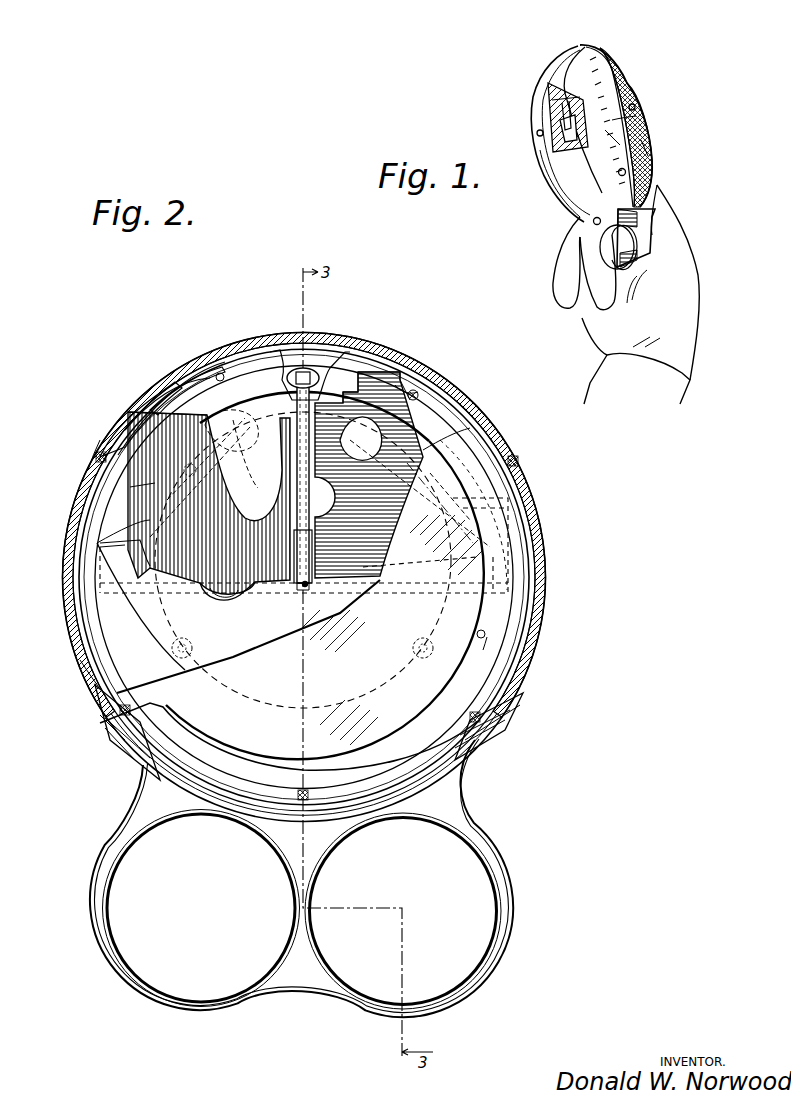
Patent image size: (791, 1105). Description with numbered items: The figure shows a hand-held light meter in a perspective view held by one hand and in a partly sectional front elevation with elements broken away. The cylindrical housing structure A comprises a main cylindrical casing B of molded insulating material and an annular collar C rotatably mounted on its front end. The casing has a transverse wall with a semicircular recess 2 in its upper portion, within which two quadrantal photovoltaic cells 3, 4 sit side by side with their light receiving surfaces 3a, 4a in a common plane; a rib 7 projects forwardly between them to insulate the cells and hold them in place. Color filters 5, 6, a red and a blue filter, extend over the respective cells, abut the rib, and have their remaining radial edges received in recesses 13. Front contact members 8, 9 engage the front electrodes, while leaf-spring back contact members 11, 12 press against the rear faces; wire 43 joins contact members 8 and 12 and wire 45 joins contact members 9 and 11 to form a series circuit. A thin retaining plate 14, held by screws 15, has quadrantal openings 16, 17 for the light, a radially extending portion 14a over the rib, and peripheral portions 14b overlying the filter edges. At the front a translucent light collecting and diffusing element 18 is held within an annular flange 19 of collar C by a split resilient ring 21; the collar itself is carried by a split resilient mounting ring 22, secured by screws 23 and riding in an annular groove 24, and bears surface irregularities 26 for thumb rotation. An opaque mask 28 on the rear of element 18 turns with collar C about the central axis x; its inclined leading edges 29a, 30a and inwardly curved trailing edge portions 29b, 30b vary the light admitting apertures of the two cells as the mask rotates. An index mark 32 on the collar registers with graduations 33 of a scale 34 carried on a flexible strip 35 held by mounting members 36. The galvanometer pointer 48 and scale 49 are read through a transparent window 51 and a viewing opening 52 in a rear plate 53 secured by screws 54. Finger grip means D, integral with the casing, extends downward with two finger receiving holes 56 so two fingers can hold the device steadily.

In FIG. 2, the semicircular recess 2 is at (410, 395).
In FIG. 2, the photovoltaic cell 3 is at (228, 393).
In FIG. 2, the light receiving surface 3a is at (230, 417).
In FIG. 2, the photovoltaic cell 4 is at (380, 398).
In FIG. 2, the light receiving surface 4a is at (393, 523).
In FIG. 2, the color filter 5 is at (130, 487).
In FIG. 2, the color filter 6 is at (423, 450).
In FIG. 2, the rib 7 is at (301, 498).
In FIG. 2, the front contact member 8 is at (207, 417).
In FIG. 2, the front contact member 9 is at (365, 393).
In FIG. 2, the back contact member 11 is at (247, 447).
In FIG. 2, the back contact member 12 is at (453, 498).
In FIG. 2, the recesses 13 is at (213, 592).
In FIG. 2, the retaining plate 14 is at (97, 617).
In FIG. 2, the radially extending portion 14a is at (293, 552).
In FIG. 2, the peripheral portions 14b is at (512, 402).
In FIG. 2, the screws 15 is at (220, 377).
In FIG. 2, the quadrantal opening 16 is at (103, 508).
In FIG. 2, the quadrantal opening 17 is at (463, 508).
In FIG. 2, the light collecting and diffusing element 18 is at (463, 547).
In FIG. 2, the annular flange 19 is at (485, 637).
In FIG. 2, the split resilient ring 21 is at (95, 670).
In FIG. 2, the split resilient mounting ring 22 is at (133, 420).
In FIG. 1, the screws 23 is at (635, 105).
In FIG. 2, the screws 23 is at (98, 457).
In FIG. 2, the annular groove 24 is at (220, 357).
In FIG. 1, the surface irregularities 26 is at (647, 150).
In FIG. 2, the opaque mask 28 is at (153, 617).
In FIG. 2, the inclined leading edge 29a is at (110, 547).
In FIG. 2, the trailing edge portion 29b is at (193, 670).
In FIG. 2, the inclined leading edge 30a is at (377, 570).
In FIG. 2, the trailing edge portion 30b is at (384, 688).
In FIG. 1, the index mark 32 is at (604, 47).
In FIG. 1, the graduations 33 is at (620, 68).
In FIG. 1, the scale 34 is at (638, 116).
In FIG. 1, the flexible strip 35 is at (619, 141).
In FIG. 2, the flexible strip 35 is at (523, 693).
In FIG. 1, the mounting members 36 is at (627, 172).
In FIG. 2, the mounting members 36 is at (499, 725).
In FIG. 2, the wire 43 is at (298, 368).
In FIG. 2, the wire 45 is at (315, 372).
In FIG. 1, the pointer 48 is at (567, 133).
In FIG. 1, the scale 49 is at (552, 108).
In FIG. 1, the transparent window 51 is at (548, 118).
In FIG. 1, the viewing opening 52 is at (545, 88).
In FIG. 1, the plate 53 is at (560, 187).
In FIG. 1, the screws 54 is at (537, 133).
In FIG. 1, the finger receiving holes 56 is at (630, 250).
In FIG. 2, the finger receiving holes 56 is at (143, 970).
In FIG. 1, the cylindrical housing structure A is at (590, 47).
In FIG. 2, the cylindrical housing structure A is at (556, 573).
In FIG. 1, the main cylindrical casing B is at (552, 62).
In FIG. 2, the main cylindrical casing B is at (397, 373).
In FIG. 1, the annular collar C is at (628, 88).
In FIG. 2, the annular collar C is at (517, 617).
In FIG. 1, the finger grip means D is at (643, 227).
In FIG. 2, the finger grip means D is at (497, 847).
In FIG. 2, the central axis x is at (306, 585).